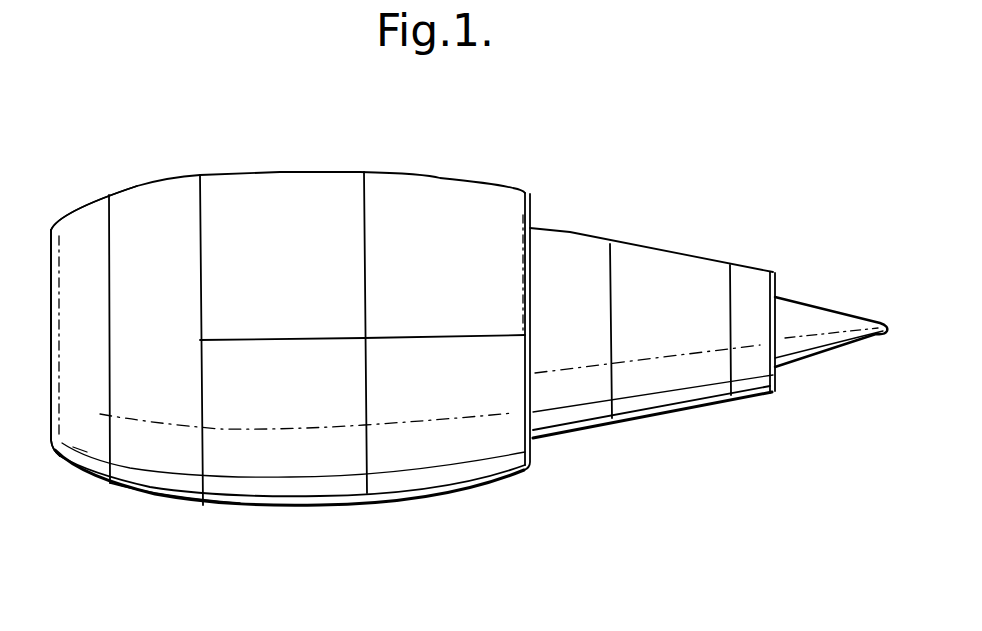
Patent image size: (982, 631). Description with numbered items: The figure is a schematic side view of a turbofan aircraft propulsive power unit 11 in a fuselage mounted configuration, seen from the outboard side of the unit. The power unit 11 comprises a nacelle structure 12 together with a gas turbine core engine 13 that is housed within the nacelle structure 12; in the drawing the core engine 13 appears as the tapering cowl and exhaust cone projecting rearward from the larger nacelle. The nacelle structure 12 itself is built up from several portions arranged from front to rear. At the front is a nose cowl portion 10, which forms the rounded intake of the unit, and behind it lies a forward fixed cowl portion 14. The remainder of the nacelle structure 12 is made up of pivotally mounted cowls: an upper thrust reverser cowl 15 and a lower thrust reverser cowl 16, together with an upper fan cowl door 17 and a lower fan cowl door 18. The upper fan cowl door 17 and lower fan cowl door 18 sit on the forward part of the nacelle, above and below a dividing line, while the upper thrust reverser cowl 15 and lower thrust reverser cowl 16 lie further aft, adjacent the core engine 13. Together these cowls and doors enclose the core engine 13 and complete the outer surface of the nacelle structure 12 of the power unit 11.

The nose cowl portion 10 is at (88, 476).
The turbofan propulsive power unit 11 is at (557, 117).
The nacelle structure 12 is at (137, 189).
The gas turbine core engine 13 is at (569, 231).
The forward fixed cowl portion 14 is at (177, 503).
The upper thrust reverser cowl 15 is at (413, 188).
The lower thrust reverser cowl 16 is at (453, 447).
The upper fan cowl door 17 is at (270, 188).
The lower fan cowl door 18 is at (308, 458).